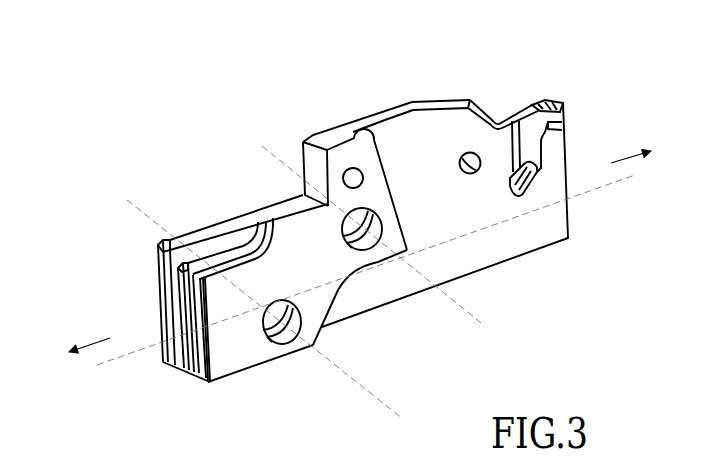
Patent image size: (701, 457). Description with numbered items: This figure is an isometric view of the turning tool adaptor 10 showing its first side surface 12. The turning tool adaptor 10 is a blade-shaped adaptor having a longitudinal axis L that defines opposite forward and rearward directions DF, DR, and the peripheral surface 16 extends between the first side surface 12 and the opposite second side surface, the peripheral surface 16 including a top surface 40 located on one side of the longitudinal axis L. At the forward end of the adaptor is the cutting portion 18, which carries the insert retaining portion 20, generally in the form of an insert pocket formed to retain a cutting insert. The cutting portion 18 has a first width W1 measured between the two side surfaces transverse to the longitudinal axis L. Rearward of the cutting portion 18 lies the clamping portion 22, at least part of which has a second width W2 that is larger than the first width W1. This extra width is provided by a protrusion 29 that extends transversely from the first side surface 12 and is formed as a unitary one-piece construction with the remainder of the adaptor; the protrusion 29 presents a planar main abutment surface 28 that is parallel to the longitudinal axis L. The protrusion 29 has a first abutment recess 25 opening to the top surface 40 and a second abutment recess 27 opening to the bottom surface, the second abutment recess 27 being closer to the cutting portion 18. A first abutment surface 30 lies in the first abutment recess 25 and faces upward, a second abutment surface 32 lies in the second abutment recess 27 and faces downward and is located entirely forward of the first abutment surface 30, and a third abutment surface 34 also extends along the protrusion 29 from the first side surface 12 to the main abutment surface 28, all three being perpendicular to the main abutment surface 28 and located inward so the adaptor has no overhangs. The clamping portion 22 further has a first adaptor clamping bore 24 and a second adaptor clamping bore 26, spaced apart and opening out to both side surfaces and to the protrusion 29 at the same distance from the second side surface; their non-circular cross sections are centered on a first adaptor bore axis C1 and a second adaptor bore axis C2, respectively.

The turning tool adaptor 10 is at (366, 230).
The first side surface 12 is at (532, 237).
The peripheral surface 16 is at (340, 136).
The cutting portion 18 is at (571, 72).
The insert retaining portion 20 is at (558, 100).
The clamping portion 22 is at (188, 212).
The first adaptor clamping bore 24 is at (345, 253).
The first abutment recess 25 is at (197, 230).
The second adaptor clamping bore 26 is at (257, 358).
The second abutment recess 27 is at (347, 300).
The main abutment surface 28 is at (170, 348).
The protrusion 29 is at (242, 312).
The first abutment surface 30 is at (162, 262).
The second abutment surface 32 is at (377, 266).
The third abutment surface 34 is at (190, 312).
The top surface 40 is at (216, 222).
The first width W1 is at (482, 138).
The second width W2 is at (327, 247).
The forward direction DF is at (645, 145).
The rearward direction DR is at (72, 359).
The longitudinal axis L is at (594, 192).
The first adaptor bore axis C1 is at (392, 248).
The second adaptor bore axis C2 is at (283, 322).